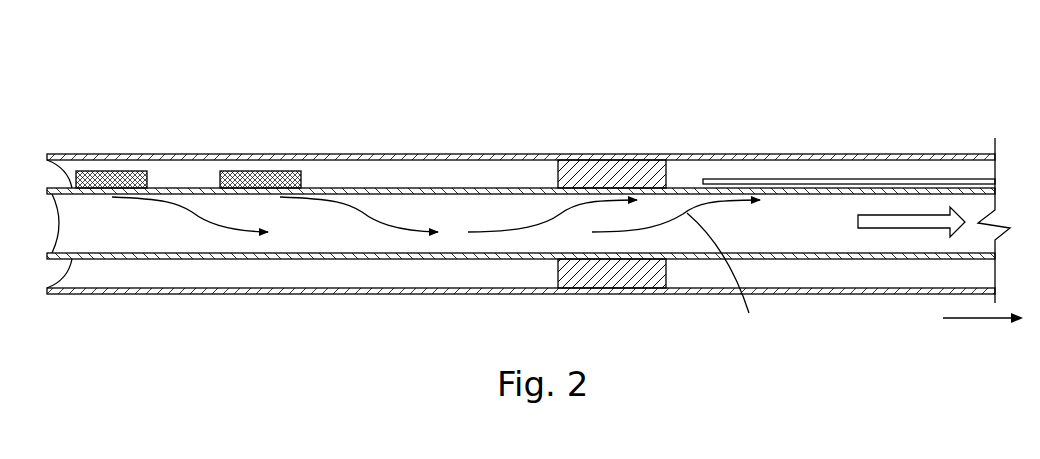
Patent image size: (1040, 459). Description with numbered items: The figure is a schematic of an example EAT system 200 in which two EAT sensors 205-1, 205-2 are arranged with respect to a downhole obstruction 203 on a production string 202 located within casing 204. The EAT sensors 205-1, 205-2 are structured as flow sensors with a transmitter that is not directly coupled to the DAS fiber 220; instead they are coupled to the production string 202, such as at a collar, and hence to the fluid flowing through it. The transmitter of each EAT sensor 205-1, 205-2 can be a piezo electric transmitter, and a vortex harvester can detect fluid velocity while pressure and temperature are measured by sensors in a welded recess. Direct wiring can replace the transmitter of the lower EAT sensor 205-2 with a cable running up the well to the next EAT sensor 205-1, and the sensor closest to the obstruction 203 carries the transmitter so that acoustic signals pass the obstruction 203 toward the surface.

The EAT system 200 is at (478, 77).
The production string 202 is at (435, 188).
The downhole obstruction 203 is at (617, 273).
The casing 204 is at (729, 153).
The EAT sensor 205-1 is at (262, 172).
The EAT sensor 205-2 is at (107, 172).
The DAS fiber 220 is at (872, 178).